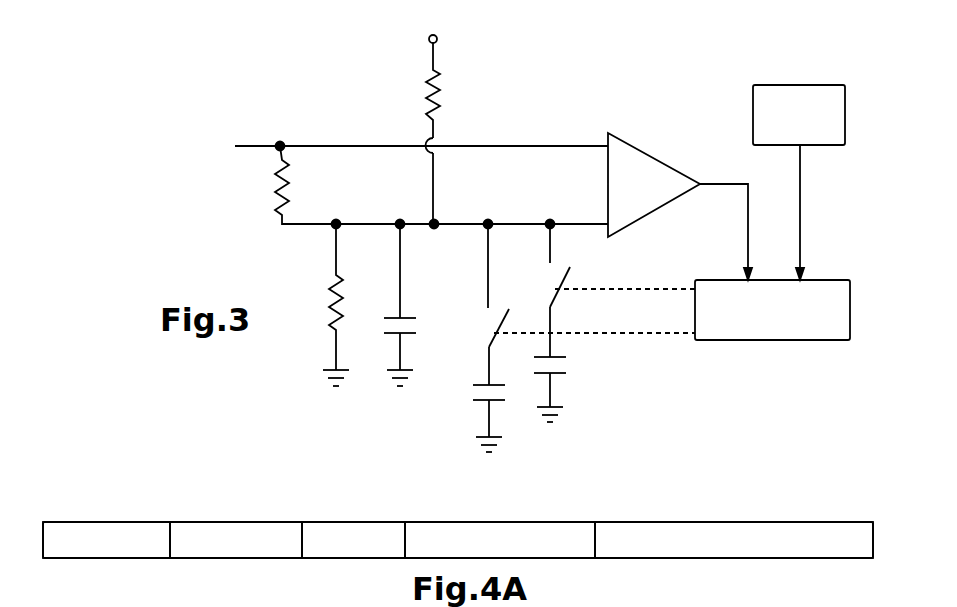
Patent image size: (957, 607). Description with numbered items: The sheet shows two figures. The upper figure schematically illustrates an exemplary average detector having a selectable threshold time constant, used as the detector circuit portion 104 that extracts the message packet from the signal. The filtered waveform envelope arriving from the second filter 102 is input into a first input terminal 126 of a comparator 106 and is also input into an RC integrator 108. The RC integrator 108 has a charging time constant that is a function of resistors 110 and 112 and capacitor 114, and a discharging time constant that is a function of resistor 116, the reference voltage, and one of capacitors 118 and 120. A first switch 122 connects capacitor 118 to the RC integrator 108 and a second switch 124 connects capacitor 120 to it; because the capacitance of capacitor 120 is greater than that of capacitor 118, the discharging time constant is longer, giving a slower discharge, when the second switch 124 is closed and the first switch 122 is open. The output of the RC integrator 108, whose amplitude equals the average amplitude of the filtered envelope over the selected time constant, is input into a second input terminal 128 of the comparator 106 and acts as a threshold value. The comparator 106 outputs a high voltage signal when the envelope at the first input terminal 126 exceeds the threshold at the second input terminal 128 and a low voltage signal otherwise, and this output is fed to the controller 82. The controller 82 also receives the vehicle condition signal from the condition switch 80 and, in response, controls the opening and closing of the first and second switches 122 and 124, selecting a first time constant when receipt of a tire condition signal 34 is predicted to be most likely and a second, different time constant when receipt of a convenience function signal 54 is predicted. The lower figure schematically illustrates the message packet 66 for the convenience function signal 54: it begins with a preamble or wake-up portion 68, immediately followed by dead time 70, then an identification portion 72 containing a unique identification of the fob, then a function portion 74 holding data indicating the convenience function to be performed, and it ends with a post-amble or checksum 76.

In FIG. 4A, the tire condition signal 34 is at (203, 604).
In FIG. 4A, the convenience function signal 54 is at (184, 455).
In FIG. 4A, the message packet 66 is at (296, 505).
In FIG. 4A, the wake-up portion 68 is at (128, 521).
In FIG. 4A, the dead time 70 is at (227, 521).
In FIG. 4A, the identification portion 72 is at (338, 521).
In FIG. 4A, the function portion 74 is at (488, 521).
In FIG. 4A, the checksum 76 is at (656, 521).
In FIG. 3, the condition switch 80 is at (753, 106).
In FIG. 3, the controller 82 is at (761, 330).
In FIG. 3, the second filter 102 is at (384, 146).
In FIG. 3, the detector circuit portion 104 is at (190, 252).
In FIG. 3, the comparator 106 is at (658, 157).
In FIG. 3, the RC integrator 108 is at (285, 270).
In FIG. 3, the resistor 110 is at (292, 190).
In FIG. 3, the resistor 112 is at (333, 314).
In FIG. 3, the capacitor 114 is at (403, 316).
In FIG. 3, the resistor 116 is at (446, 99).
In FIG. 3, the capacitor 118 is at (482, 385).
In FIG. 3, the capacitor 120 is at (557, 375).
In FIG. 3, the first switch 122 is at (497, 308).
In FIG. 3, the second switch 124 is at (563, 268).
In FIG. 3, the first input terminal 126 is at (608, 145).
In FIG. 3, the second input terminal 128 is at (608, 223).